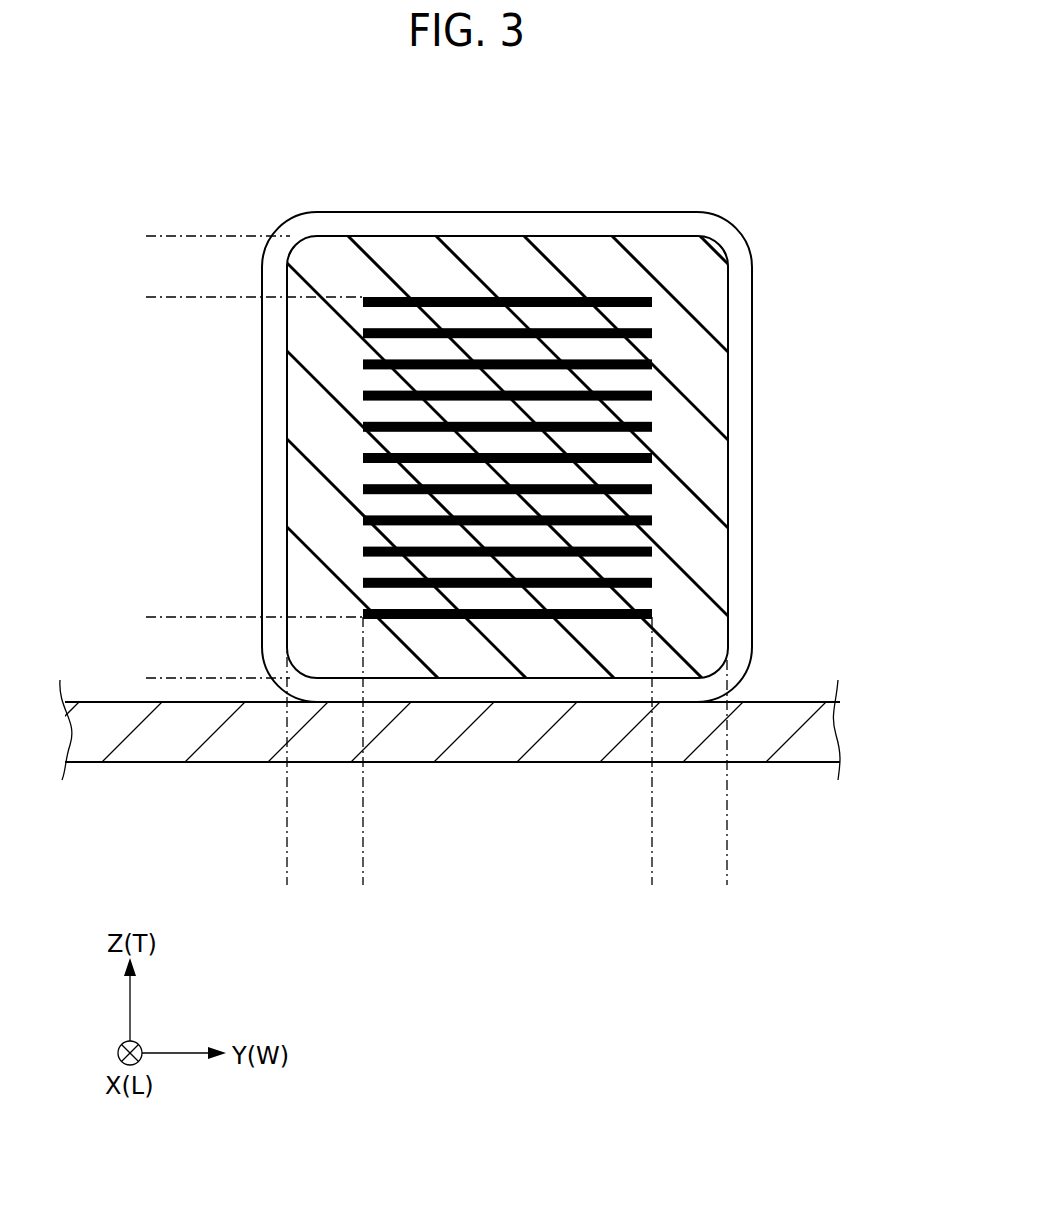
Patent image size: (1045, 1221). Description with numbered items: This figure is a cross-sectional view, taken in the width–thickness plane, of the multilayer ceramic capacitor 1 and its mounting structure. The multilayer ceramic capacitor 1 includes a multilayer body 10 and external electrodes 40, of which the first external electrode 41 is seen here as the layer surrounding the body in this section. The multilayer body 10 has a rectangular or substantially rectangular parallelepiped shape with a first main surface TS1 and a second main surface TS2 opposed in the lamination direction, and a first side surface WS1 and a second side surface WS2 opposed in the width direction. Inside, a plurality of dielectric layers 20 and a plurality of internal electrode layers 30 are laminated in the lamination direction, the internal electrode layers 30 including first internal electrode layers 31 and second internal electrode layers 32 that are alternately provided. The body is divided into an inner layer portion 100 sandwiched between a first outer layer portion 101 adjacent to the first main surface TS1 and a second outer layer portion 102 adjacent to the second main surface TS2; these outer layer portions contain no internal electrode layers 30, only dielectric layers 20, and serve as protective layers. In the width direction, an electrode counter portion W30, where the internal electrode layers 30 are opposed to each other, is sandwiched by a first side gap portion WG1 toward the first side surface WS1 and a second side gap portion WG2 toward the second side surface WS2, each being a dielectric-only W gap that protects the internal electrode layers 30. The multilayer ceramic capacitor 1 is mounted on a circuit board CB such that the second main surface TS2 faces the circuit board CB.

The multilayer ceramic capacitor 1 is at (706, 160).
The multilayer body 10 is at (635, 236).
The dielectric layers 20 is at (462, 658).
The internal electrode layers 30 is at (507, 364).
The first internal electrode layers 31 is at (396, 297).
The second internal electrode layers 32 is at (453, 327).
The external electrodes 40 is at (582, 457).
The first external electrode 41 is at (740, 410).
The inner layer portion 100 is at (131, 297).
The first outer layer portion 101 is at (131, 236).
The second outer layer portion 102 is at (131, 617).
The first main surface TS1 is at (565, 236).
The second main surface TS2 is at (392, 678).
The first side surface WS1 is at (287, 480).
The second side surface WS2 is at (728, 480).
The circuit board CB is at (795, 737).
The first side gap portion WG1 is at (363, 883).
The electrode counter portion W30 is at (652, 883).
The second side gap portion WG2 is at (727, 883).